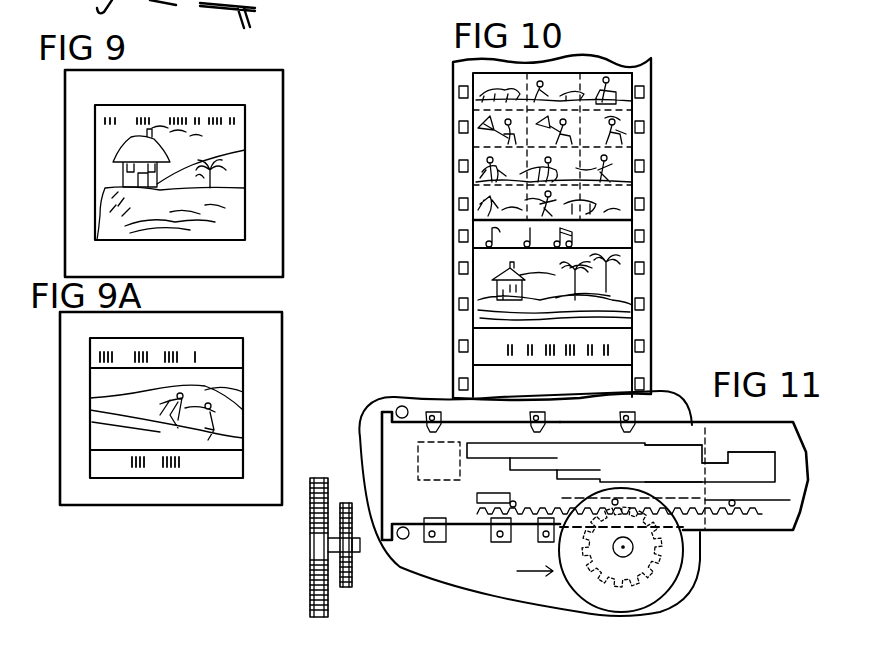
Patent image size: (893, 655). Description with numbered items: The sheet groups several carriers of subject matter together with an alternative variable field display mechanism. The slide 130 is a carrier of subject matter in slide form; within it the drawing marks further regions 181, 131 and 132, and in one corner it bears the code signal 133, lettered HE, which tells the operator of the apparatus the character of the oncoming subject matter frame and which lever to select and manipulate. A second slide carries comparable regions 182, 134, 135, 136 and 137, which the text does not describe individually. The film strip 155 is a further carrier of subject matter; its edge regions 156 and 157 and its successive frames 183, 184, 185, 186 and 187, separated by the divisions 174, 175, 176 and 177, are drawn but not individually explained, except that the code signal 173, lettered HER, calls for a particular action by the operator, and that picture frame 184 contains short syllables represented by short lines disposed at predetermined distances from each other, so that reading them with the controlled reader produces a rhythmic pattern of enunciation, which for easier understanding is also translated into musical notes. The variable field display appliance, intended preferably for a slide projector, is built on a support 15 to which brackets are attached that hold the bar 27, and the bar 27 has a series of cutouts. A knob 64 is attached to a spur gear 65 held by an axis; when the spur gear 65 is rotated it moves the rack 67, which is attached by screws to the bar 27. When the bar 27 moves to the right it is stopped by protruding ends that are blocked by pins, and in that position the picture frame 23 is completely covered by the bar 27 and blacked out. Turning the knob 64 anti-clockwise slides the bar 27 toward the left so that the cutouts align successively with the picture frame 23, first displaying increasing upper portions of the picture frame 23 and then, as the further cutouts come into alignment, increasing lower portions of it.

In FIG. 9, the slide 130 is at (272, 100).
In FIG. 9, the card designation 181 is at (89, 84).
In FIG. 9, the picture area 131 is at (233, 180).
In FIG. 9, the code track 132 is at (240, 124).
In FIG. 9A, the code track 132 is at (213, 351).
In FIG. 9, the code signal 133 is at (236, 231).
In FIG. 9A, the card designation 182 is at (85, 326).
In FIG. 9A, the code identifier 134 is at (236, 352).
In FIG. 9A, the picture area 135 is at (243, 412).
In FIG. 9A, the lower identification field 136 is at (236, 444).
In FIG. 9A, the lower code track 137 is at (217, 464).
In FIG. 10, the film strip 155 is at (455, 72).
In FIG. 10, the film edge 156 is at (667, 225).
In FIG. 10, the sprocket holes 157 is at (645, 126).
In FIG. 10, the first picture frame 183 is at (552, 235).
In FIG. 10, the code signal 173 is at (628, 215).
In FIG. 10, the frame dividing line 174 is at (632, 236).
In FIG. 10, the picture frame 184 is at (492, 230).
In FIG. 10, the picture frame 175 is at (625, 288).
In FIG. 10, the third picture frame 185 is at (492, 262).
In FIG. 10, the frame dividing line 176 is at (628, 324).
In FIG. 10, the code frame 186 is at (492, 339).
In FIG. 10, the code track frame 177 is at (620, 354).
In FIG. 10, the end frame 187 is at (492, 376).
In FIG. 11, the support 15 is at (360, 458).
In FIG. 11, the bar 27 is at (745, 426).
In FIG. 11, the picture frame 23 is at (420, 456).
In FIG. 11, the rack 67 is at (792, 524).
In FIG. 11, the knob 64 is at (316, 578).
In FIG. 11, the spur gear 65 is at (340, 588).